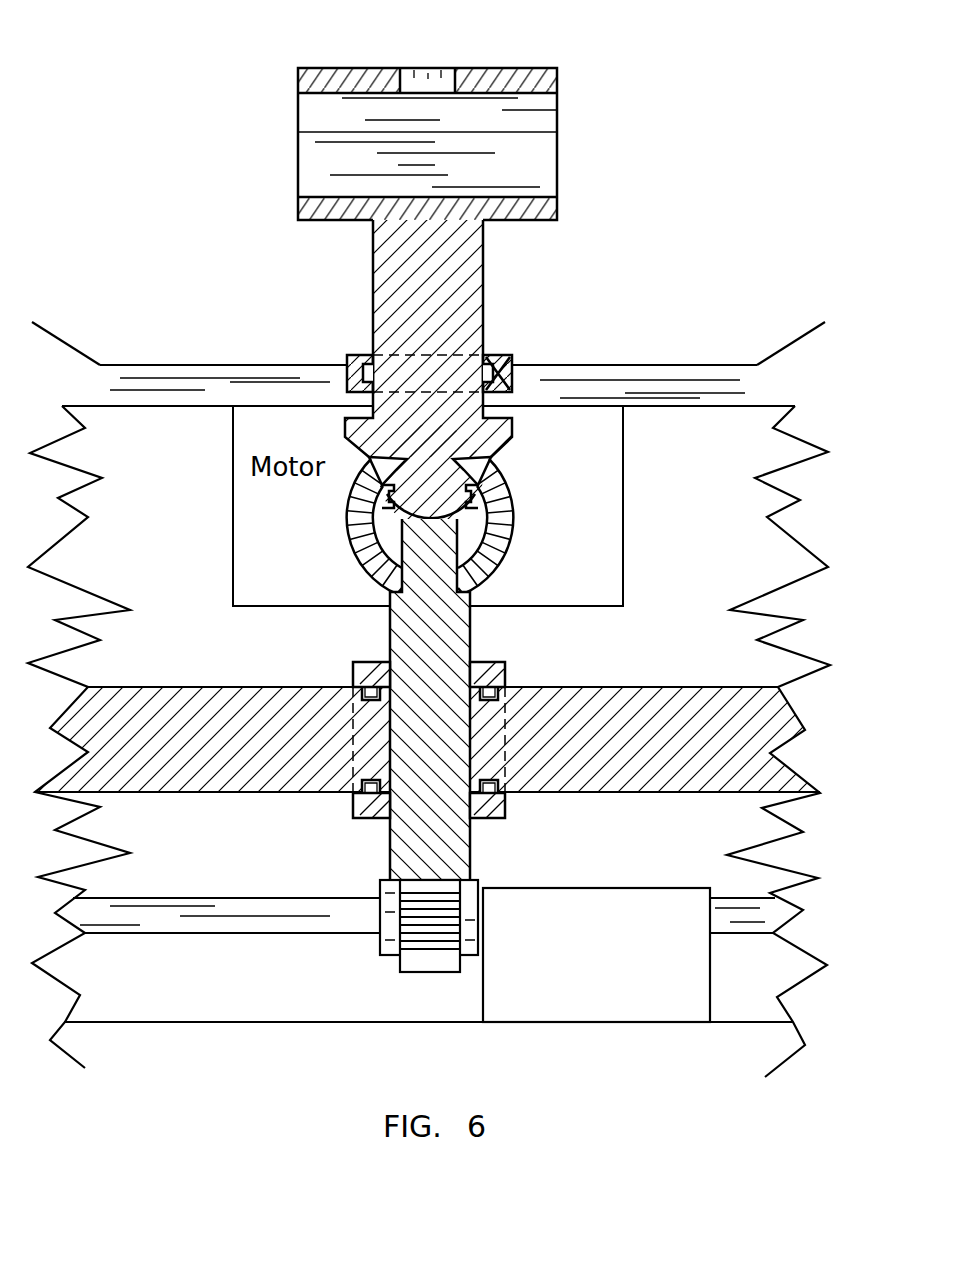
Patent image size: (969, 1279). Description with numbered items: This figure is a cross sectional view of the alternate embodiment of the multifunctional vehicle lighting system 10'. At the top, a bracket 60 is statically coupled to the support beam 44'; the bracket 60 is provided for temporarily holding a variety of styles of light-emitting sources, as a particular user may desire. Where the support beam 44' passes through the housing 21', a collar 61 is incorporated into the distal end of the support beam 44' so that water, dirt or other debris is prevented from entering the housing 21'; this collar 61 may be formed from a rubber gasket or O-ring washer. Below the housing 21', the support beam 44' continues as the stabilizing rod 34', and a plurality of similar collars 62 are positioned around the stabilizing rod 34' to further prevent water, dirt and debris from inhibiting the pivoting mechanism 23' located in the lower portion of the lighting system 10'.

The multifunctional vehicle lighting system 10' is at (427, 544).
The bracket 60 is at (545, 83).
The support beam 44' is at (455, 374).
The collar 61 is at (508, 357).
The housing 21' is at (428, 320).
The stabilizing rod 34' is at (499, 703).
The collars 62 is at (358, 668).
The pivoting mechanism 23' is at (545, 921).